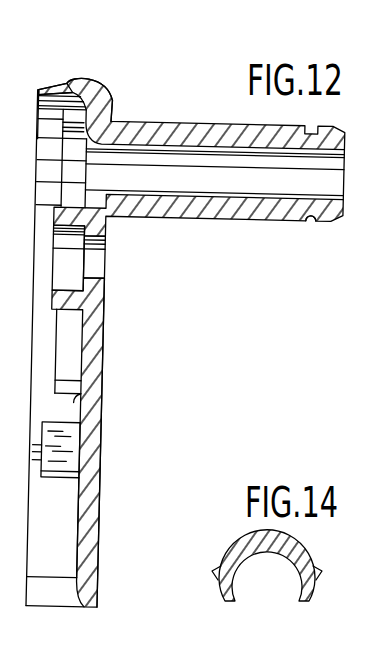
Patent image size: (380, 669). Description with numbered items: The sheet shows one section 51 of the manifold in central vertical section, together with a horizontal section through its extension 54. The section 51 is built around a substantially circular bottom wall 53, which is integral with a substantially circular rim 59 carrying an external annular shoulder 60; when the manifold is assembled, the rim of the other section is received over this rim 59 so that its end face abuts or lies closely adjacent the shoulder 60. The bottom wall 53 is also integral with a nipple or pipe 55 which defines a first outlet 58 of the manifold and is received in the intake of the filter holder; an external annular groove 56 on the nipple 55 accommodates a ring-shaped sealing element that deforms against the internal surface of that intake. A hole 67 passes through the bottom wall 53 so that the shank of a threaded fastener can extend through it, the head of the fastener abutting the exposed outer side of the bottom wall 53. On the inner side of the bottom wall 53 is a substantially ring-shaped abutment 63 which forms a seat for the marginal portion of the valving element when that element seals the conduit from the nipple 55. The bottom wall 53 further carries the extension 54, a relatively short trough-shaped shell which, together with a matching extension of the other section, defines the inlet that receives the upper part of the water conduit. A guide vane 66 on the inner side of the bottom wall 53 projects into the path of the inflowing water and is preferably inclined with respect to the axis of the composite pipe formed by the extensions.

In FIG. 12, the section 51 is at (110, 301).
In FIG. 12, the bottom wall 53 is at (103, 350).
In FIG. 14, the extension 54 is at (308, 541).
In FIG. 12, the nipple 55 is at (197, 123).
In FIG. 12, the external annular groove 56 is at (312, 223).
In FIG. 12, the first outlet 58 is at (268, 188).
In FIG. 12, the rim 59 is at (84, 77).
In FIG. 12, the external annular shoulder 60 is at (66, 82).
In FIG. 12, the abutment 63 is at (103, 398).
In FIG. 12, the guide vane 66 is at (70, 450).
In FIG. 12, the hole 67 is at (98, 263).